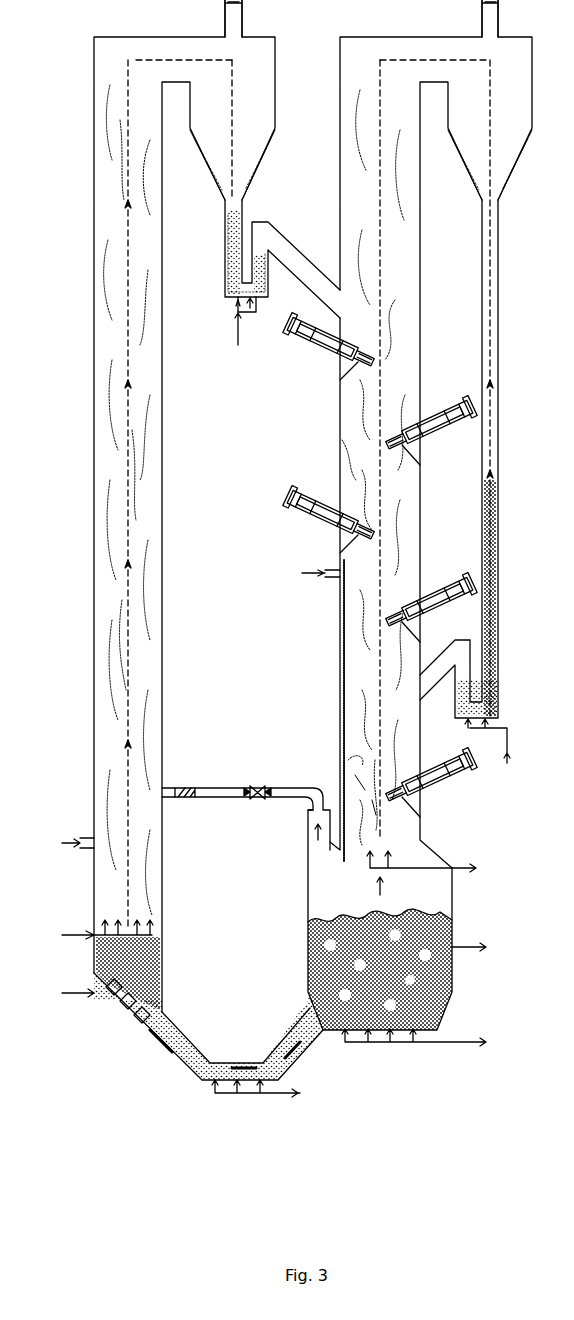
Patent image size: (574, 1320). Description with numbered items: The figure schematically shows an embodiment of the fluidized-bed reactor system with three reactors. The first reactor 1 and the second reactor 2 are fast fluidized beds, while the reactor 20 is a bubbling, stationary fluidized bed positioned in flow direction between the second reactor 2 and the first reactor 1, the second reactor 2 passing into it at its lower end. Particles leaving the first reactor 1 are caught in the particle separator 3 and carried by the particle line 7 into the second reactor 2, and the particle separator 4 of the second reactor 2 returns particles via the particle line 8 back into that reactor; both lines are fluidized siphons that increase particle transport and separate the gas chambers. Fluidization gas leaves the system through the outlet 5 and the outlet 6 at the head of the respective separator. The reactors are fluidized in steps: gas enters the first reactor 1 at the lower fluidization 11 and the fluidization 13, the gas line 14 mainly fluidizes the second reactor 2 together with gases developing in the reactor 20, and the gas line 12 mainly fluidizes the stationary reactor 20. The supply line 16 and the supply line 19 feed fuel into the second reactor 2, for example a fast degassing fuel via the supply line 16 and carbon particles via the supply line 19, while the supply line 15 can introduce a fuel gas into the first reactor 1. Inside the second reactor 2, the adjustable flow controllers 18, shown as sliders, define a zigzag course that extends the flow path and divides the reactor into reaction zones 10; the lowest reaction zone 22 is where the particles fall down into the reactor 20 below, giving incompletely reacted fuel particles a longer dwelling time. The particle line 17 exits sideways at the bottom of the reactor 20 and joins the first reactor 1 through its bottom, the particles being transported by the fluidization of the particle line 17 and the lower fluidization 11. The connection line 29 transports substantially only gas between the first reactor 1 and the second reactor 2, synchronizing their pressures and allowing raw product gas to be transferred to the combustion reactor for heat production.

The first reactor 1 is at (94, 392).
The second reactor 2 is at (422, 368).
The particle separator 3 is at (262, 158).
The particle separator 4 is at (458, 160).
The outlet 5 is at (224, 20).
The outlet 6 is at (486, 20).
The particle line 7 is at (226, 294).
The particle line 8 is at (456, 690).
The reaction zones 10 is at (340, 430).
The fluidization gas inlet 11 is at (92, 998).
The gas line 12 is at (460, 1042).
The fluidization gas inlet 13 is at (88, 942).
The gas line 14 is at (458, 864).
The supply line 15 is at (90, 836).
The supply line 16 is at (460, 952).
The particle line 17 is at (258, 1062).
The adjustable flow controllers 18 is at (320, 352).
The supply line 19 is at (326, 578).
The reactor 20 is at (308, 920).
The lowest reaction zone 22 is at (346, 768).
The connection line 29 is at (230, 800).